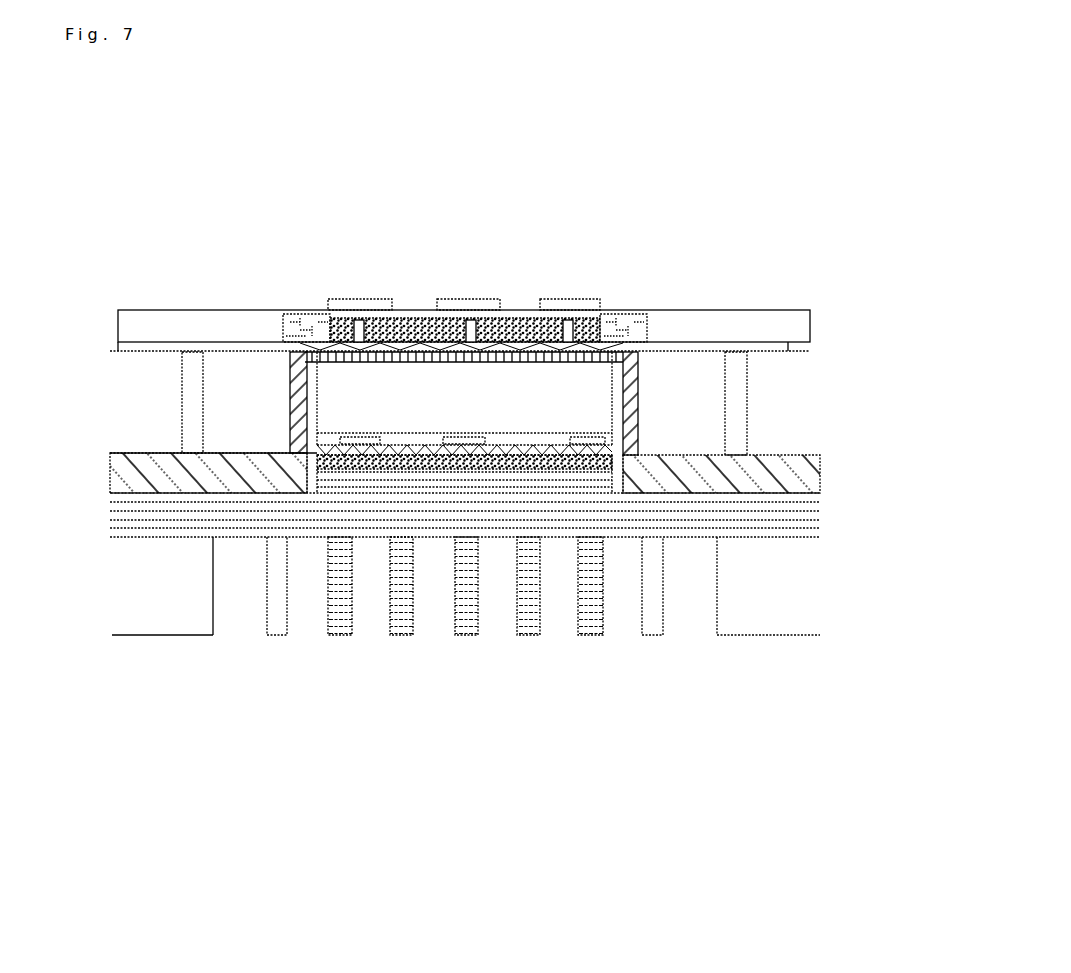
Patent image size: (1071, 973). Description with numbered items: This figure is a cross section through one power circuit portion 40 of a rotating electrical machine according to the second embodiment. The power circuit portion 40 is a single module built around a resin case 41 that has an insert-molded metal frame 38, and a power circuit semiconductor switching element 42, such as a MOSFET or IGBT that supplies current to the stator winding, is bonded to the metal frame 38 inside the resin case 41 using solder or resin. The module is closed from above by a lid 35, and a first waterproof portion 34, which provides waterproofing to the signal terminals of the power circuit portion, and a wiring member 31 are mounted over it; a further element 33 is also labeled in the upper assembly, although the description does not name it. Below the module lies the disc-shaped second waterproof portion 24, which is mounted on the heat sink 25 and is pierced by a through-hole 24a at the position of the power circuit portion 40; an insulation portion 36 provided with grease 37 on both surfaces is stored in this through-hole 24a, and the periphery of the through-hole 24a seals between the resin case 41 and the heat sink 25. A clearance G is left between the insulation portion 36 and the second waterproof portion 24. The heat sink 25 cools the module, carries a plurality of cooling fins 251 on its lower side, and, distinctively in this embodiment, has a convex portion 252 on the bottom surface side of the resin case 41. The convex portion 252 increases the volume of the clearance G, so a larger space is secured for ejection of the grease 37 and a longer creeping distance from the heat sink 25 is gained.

The wiring member 31 is at (641, 310).
The resin filler 33 is at (420, 342).
The first waterproof portion 34 is at (640, 342).
The lid 35 is at (437, 350).
The insulation portion 36 is at (380, 468).
The grease 37 is at (333, 452).
The metal frame 38 is at (335, 443).
The power circuit portion 40 is at (243, 388).
The resin case 41 is at (630, 446).
The power circuit semiconductor switching element 42 is at (470, 435).
The clearance G is at (630, 457).
The second waterproof portion 24 is at (715, 480).
The through-hole 24a is at (317, 458).
The heat sink 25 is at (627, 507).
The cooling fin 251 is at (473, 603).
The convex portion 252 is at (438, 490).